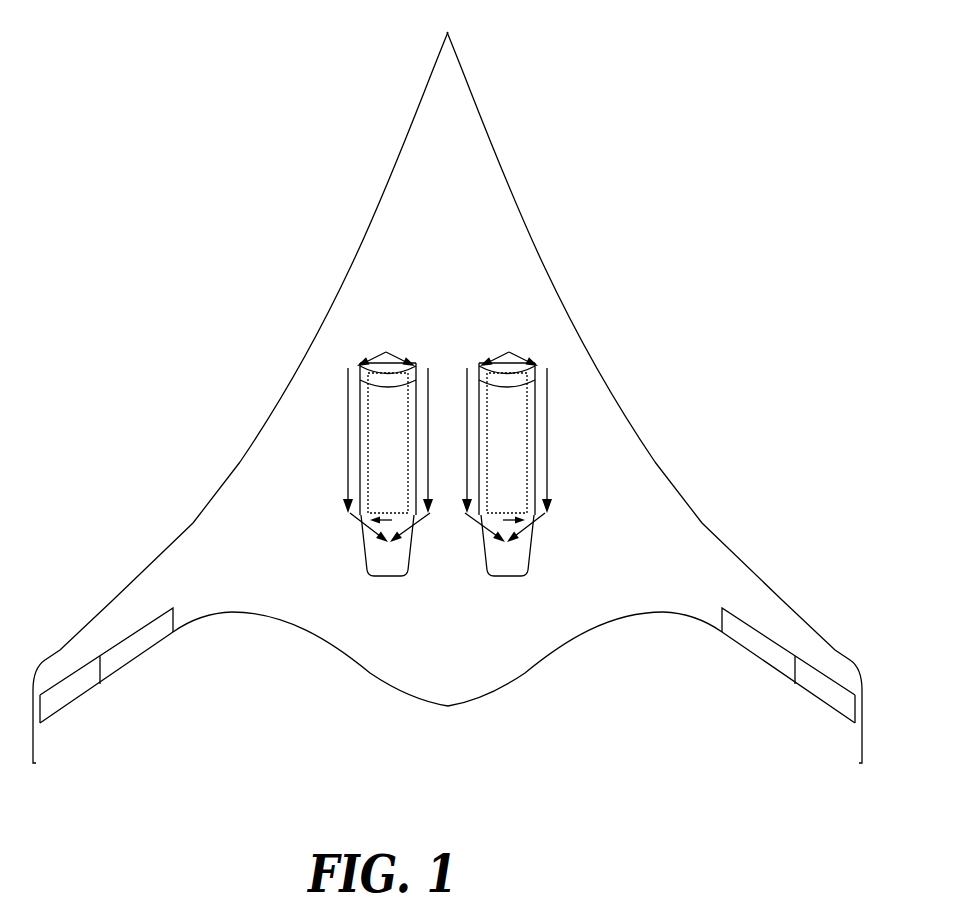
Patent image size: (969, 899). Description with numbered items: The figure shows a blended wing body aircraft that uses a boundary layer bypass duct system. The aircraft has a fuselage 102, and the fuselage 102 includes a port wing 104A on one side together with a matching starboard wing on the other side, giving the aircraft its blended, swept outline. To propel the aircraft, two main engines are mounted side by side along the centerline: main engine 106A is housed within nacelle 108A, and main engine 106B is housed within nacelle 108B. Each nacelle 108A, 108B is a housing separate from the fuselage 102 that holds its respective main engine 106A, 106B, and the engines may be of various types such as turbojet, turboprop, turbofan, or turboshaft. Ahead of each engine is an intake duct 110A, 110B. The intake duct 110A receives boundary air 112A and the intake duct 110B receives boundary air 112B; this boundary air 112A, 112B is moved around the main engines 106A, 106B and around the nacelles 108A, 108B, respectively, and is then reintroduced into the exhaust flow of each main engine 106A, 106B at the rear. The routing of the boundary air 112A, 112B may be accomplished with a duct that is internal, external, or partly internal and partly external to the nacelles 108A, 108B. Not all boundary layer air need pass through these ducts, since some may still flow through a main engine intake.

The fuselage 102 is at (545, 253).
The port wing 104A is at (240, 462).
The main engine 106A is at (380, 485).
The main engine 106B is at (516, 485).
The nacelle 108A is at (368, 410).
The nacelle 108B is at (537, 403).
The intake duct 110A is at (345, 355).
The intake duct 110B is at (548, 352).
The boundary air 112A is at (386, 340).
The boundary air 112B is at (509, 340).